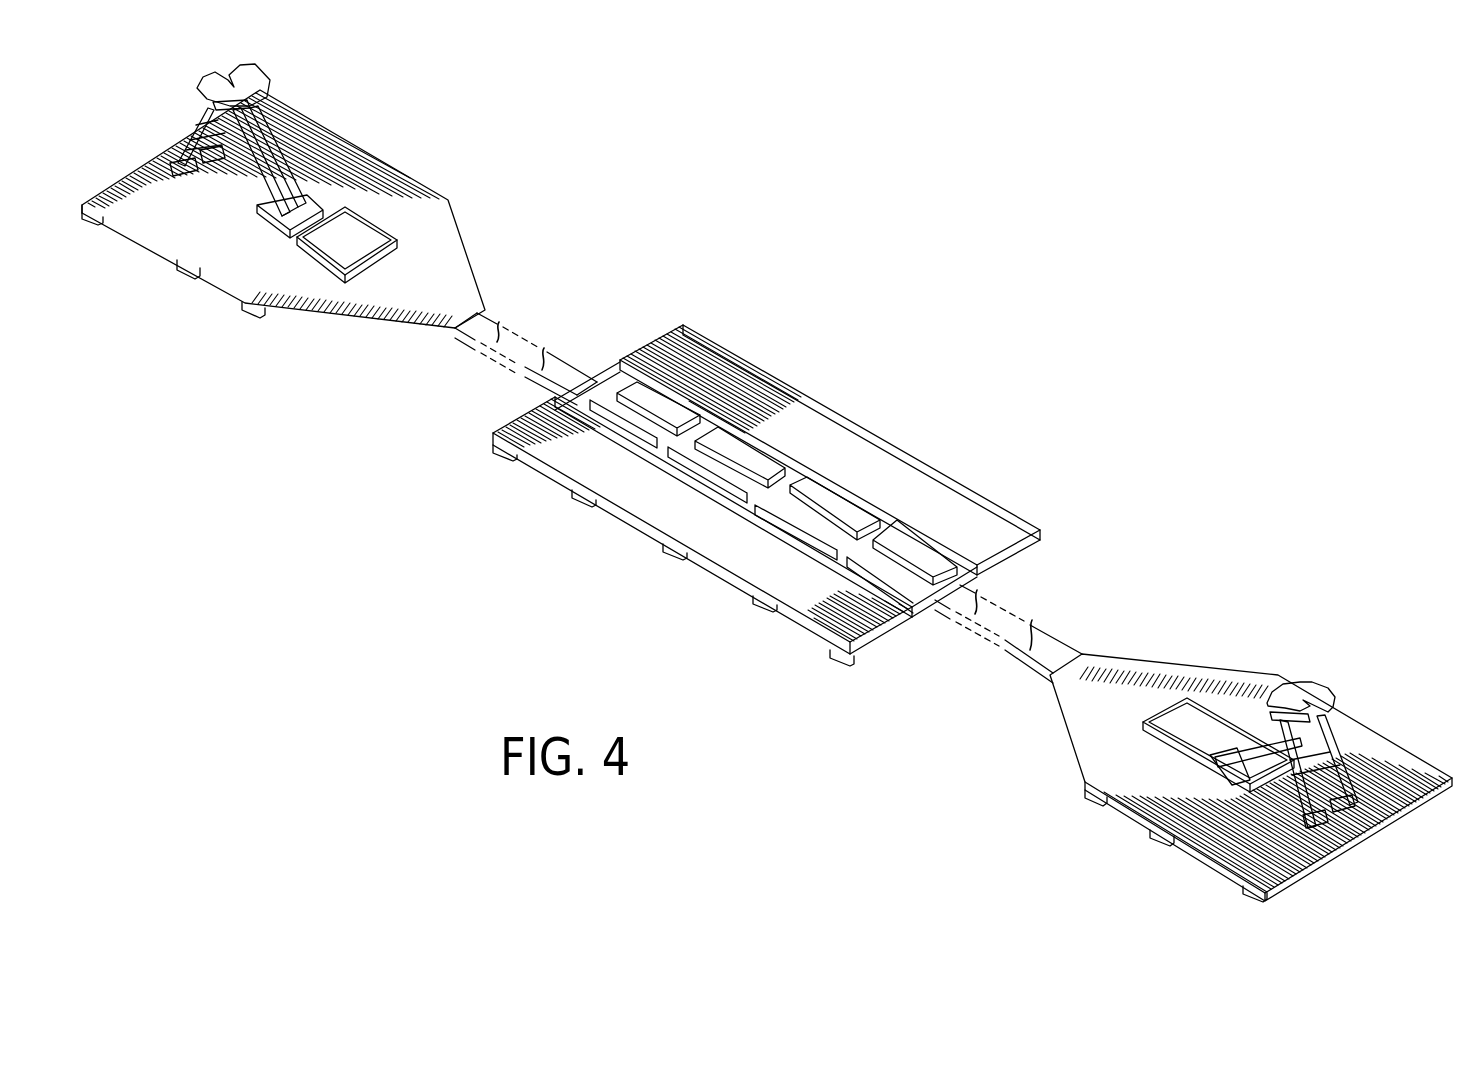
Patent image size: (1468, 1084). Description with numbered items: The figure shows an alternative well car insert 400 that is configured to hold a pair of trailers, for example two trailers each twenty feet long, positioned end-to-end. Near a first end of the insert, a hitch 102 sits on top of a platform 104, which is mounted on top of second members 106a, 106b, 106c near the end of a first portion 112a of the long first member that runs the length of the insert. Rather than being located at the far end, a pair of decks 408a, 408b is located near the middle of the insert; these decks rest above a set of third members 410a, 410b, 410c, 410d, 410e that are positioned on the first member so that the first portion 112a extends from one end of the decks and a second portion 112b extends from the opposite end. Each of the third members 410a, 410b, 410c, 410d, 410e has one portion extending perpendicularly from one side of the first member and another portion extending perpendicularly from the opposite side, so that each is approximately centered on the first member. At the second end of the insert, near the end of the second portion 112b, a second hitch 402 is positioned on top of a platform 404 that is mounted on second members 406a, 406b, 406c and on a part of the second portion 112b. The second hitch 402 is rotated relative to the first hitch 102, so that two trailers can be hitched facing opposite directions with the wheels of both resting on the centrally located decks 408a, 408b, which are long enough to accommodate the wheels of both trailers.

The well car insert 400 is at (690, 91).
The hitch 102 is at (284, 86).
The platform 104 is at (400, 197).
The second member 106a is at (90, 218).
The second member 106b is at (184, 278).
The second member 106c is at (250, 318).
The first portion of first member 112a is at (492, 327).
The second portion of first member 112b is at (1050, 648).
The deck 408a is at (578, 462).
The deck 408b is at (708, 367).
The third member 410a is at (493, 456).
The third member 410b is at (578, 502).
The third member 410c is at (670, 553).
The third member 410d is at (760, 603).
The third member 410e is at (835, 657).
The second hitch 402 is at (1327, 684).
The platform 404 is at (1153, 688).
The second member 406a is at (1246, 887).
The second member 406b is at (1153, 832).
The second member 406c is at (1088, 788).